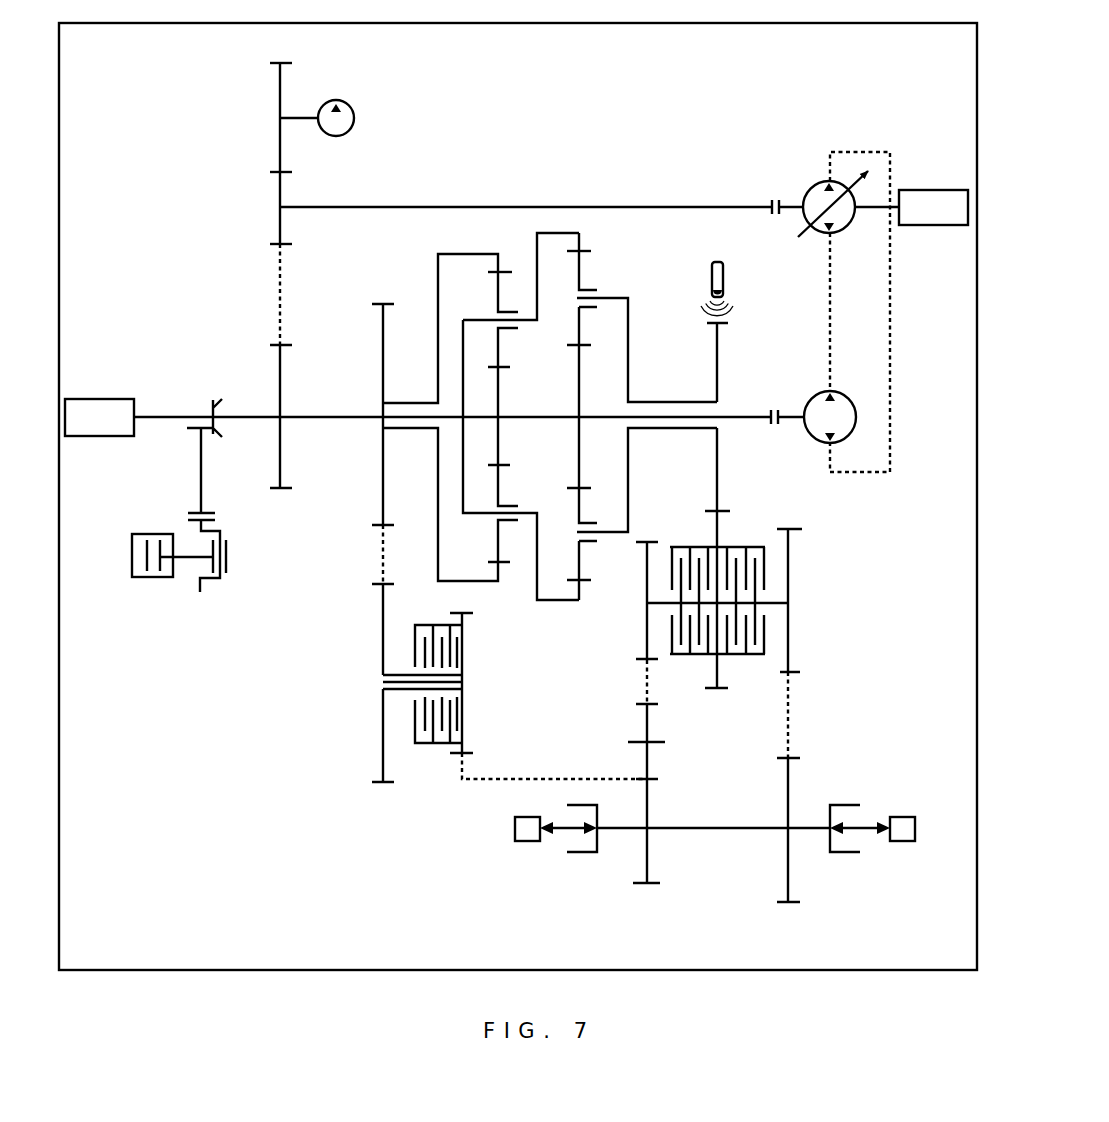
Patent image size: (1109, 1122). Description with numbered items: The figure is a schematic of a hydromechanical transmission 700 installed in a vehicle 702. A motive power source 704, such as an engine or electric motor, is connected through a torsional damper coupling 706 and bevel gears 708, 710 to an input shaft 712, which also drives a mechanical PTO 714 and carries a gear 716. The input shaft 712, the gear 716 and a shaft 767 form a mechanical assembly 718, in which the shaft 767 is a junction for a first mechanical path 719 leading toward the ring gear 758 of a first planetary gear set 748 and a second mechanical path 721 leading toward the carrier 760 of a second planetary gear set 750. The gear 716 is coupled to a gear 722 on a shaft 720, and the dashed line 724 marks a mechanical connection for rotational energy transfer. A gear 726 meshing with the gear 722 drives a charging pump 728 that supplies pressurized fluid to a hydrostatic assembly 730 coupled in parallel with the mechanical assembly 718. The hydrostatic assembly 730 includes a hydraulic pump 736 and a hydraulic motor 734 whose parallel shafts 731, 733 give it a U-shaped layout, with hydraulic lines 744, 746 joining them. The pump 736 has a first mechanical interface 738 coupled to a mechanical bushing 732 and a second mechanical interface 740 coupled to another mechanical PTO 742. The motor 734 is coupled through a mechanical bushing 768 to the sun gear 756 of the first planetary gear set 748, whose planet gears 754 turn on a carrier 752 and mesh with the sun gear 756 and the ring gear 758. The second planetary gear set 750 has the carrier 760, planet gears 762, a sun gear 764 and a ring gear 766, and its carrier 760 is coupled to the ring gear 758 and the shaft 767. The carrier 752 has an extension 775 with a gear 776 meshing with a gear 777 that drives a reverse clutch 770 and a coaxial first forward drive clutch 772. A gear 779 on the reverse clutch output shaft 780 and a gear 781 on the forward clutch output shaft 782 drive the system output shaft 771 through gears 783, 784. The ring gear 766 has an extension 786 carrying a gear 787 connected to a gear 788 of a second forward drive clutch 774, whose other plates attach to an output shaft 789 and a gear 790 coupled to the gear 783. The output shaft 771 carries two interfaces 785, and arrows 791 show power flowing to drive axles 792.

The transmission 700 is at (928, 74).
The vehicle 702 is at (68, 25).
The motive power source 704 is at (203, 626).
The torsional damper coupling 706 is at (188, 512).
The gear 708 is at (187, 431).
The gear 710 is at (222, 400).
The input shaft 712 is at (252, 412).
The mechanical PTO 714 is at (70, 399).
The gear 716 is at (282, 386).
The mechanical assembly 718 is at (218, 272).
The first mechanical path 719 is at (347, 357).
The shaft 720 is at (352, 207).
The second mechanical path 721 is at (350, 433).
The gear 722 is at (280, 188).
The dashed line 724 is at (278, 296).
The gear 726 is at (292, 73).
The charging pump 728 is at (356, 118).
The hydrostatic assembly 730 is at (912, 160).
The shaft 731 is at (796, 205).
The mechanical bushing 732 is at (776, 195).
The shaft 733 is at (795, 420).
The hydraulic motor 734 is at (812, 395).
The hydraulic pump 736 is at (821, 182).
The first mechanical interface 738 is at (801, 214).
The second mechanical interface 740 is at (860, 220).
The mechanical PTO 742 is at (908, 226).
The hydraulic line 744 is at (874, 152).
The hydraulic line 746 is at (830, 308).
The first planetary gear set 748 is at (608, 250).
The second planetary gear set 750 is at (424, 248).
The carrier 752 is at (612, 298).
The planet gears 754 is at (576, 262).
The sun gear 756 is at (578, 405).
The ring gear 758 is at (568, 233).
The carrier 760 is at (490, 317).
The planet gears 762 is at (494, 276).
The sun gear 764 is at (499, 407).
The ring gear 766 is at (498, 253).
The shaft 767 is at (352, 412).
The mechanical bushing 768 is at (773, 404).
The reverse clutch 770 is at (682, 540).
The output shaft 771 is at (682, 828).
The first forward drive clutch 772 is at (742, 536).
The second forward drive clutch 774 is at (426, 614).
The extension 775 is at (650, 405).
The gear 776 is at (717, 350).
The gear 777 is at (710, 494).
The gear 779 is at (642, 644).
The output shaft 780 is at (653, 604).
The gear 781 is at (797, 652).
The output shaft 782 is at (783, 604).
The gear 783 is at (650, 802).
The gear 784 is at (786, 798).
The interfaces 785 is at (578, 870).
The extension 786 is at (410, 403).
The gear 787 is at (383, 304).
The gear 788 is at (383, 630).
The output shaft 789 is at (383, 682).
The gear 790 is at (466, 750).
The arrows 791 is at (570, 833).
The drive axles 792 is at (515, 829).